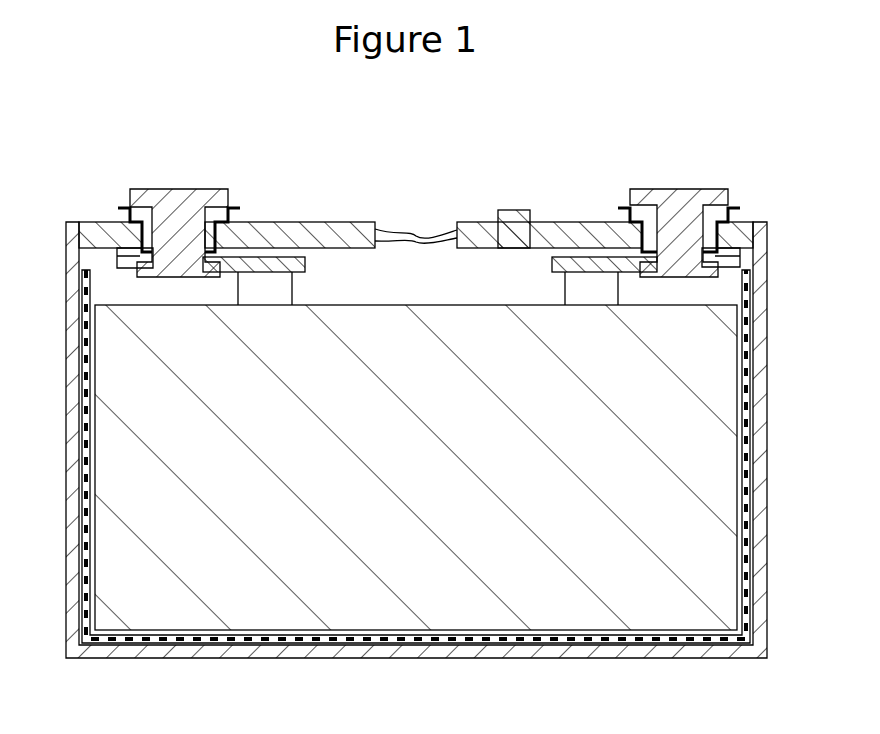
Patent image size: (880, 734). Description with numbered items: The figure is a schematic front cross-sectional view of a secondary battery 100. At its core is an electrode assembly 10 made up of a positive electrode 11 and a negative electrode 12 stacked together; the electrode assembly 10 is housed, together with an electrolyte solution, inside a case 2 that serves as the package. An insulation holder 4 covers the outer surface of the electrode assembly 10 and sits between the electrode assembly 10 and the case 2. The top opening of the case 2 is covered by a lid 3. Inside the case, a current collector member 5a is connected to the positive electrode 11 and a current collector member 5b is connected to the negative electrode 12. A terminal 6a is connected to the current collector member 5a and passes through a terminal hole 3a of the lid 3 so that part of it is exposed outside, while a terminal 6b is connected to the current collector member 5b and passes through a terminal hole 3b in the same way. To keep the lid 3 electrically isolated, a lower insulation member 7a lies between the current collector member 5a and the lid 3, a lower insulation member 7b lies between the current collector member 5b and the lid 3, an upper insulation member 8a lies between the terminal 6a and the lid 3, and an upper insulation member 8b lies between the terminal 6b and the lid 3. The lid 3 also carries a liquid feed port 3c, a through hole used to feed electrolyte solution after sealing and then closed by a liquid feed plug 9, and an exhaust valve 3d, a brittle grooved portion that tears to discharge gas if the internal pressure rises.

The secondary battery 100 is at (583, 106).
The case 2 is at (72, 380).
The lid 3 is at (345, 222).
The terminal hole 3a is at (745, 228).
The terminal hole 3b is at (119, 224).
The liquid feed port 3c is at (483, 222).
The exhaust valve 3d is at (395, 229).
The insulation holder 4 is at (608, 637).
The current collector member 5a is at (592, 262).
The current collector member 5b is at (264, 262).
The terminal 6a is at (678, 200).
The terminal 6b is at (178, 197).
The lower insulation member 7a is at (730, 255).
The lower insulation member 7b is at (120, 258).
The upper insulation member 8a is at (622, 208).
The upper insulation member 8b is at (236, 210).
The liquid feed plug 9 is at (512, 210).
The electrode assembly 10 is at (528, 607).
The positive electrode 11 is at (575, 292).
The negative electrode 12 is at (280, 296).